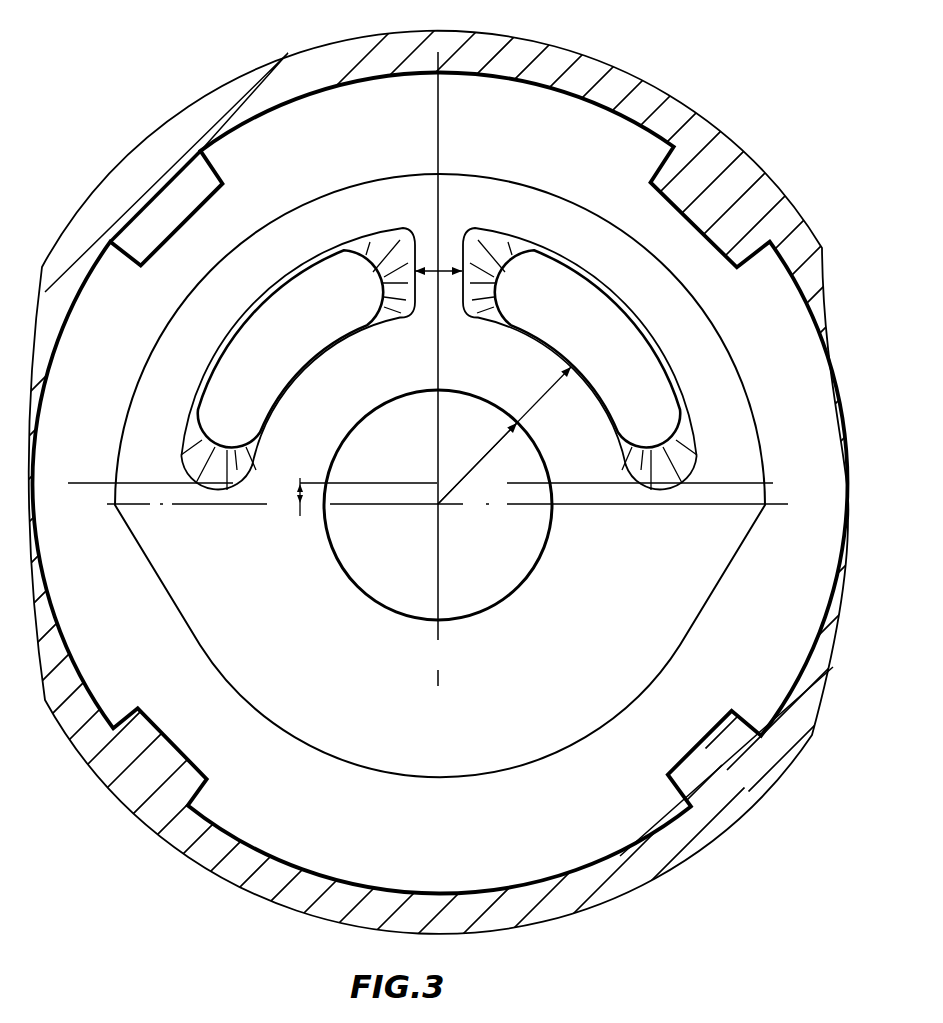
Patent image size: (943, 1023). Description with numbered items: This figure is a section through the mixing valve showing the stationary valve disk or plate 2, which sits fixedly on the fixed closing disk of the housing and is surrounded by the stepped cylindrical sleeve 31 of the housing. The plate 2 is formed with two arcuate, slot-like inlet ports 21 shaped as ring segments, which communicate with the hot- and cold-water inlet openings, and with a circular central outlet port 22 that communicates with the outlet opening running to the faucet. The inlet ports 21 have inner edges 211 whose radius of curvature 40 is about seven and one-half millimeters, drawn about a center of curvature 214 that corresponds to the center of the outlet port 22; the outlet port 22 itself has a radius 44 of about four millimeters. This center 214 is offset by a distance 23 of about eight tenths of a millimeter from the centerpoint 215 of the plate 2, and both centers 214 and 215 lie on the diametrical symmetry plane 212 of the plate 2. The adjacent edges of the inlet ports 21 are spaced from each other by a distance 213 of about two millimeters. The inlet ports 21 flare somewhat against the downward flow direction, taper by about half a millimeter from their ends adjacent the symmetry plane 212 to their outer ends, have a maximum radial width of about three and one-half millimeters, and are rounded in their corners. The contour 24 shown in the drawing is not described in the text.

The valve plate 2 is at (556, 96).
The stepped cylindrical sleeve 31 is at (626, 86).
The inlet ports 21 is at (298, 310).
The inner edges 211 is at (303, 377).
The diametrical symmetry plane 212 is at (440, 140).
The distance 213 is at (438, 260).
The center of curvature 214 is at (440, 505).
The centerpoint of the plate 215 is at (436, 481).
The outlet port 22 is at (472, 593).
The distance 23 is at (296, 497).
The inner contour 24 is at (692, 640).
The radius of curvature 40 is at (551, 387).
The radius 44 is at (469, 453).